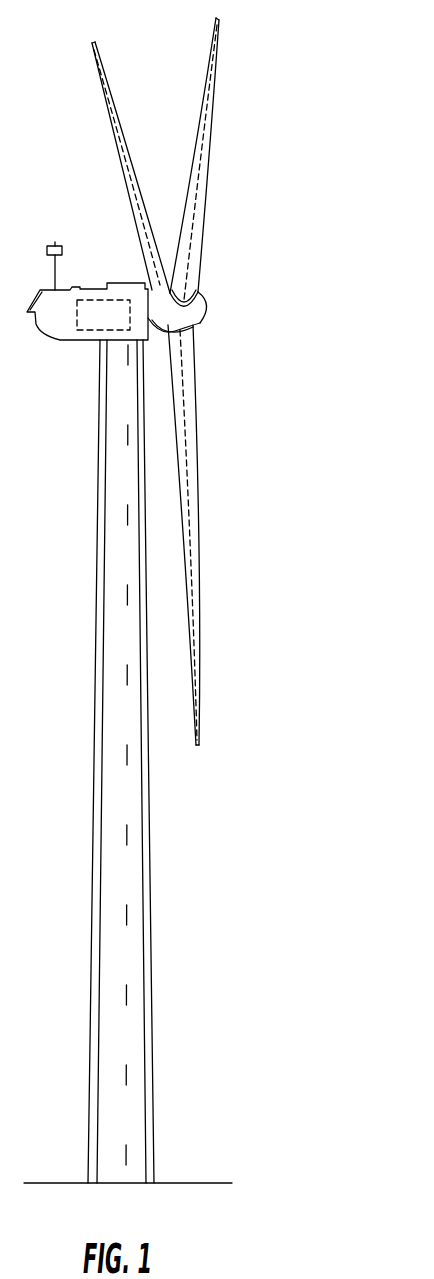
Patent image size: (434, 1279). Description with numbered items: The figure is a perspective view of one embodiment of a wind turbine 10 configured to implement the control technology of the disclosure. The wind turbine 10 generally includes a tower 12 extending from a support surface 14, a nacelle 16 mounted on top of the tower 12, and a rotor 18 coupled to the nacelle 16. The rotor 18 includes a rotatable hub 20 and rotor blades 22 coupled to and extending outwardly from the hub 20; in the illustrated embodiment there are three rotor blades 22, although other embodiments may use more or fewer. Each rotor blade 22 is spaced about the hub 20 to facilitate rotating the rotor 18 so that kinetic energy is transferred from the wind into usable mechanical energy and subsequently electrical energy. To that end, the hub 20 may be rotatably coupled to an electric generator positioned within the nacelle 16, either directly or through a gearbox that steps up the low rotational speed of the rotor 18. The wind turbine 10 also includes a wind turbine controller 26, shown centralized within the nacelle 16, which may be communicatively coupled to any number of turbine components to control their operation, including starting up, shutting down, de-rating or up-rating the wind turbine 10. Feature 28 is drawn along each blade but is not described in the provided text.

The wind turbine 10 is at (335, 150).
The tower 12 is at (133, 830).
The support surface 14 is at (58, 1183).
The nacelle 16 is at (67, 323).
The rotor 18 is at (181, 381).
The rotatable hub 20 is at (208, 308).
The rotor blade 22 is at (164, 381).
The wind turbine controller 26 is at (95, 298).
The lightning conductor / blade structural component 28 is at (123, 165).